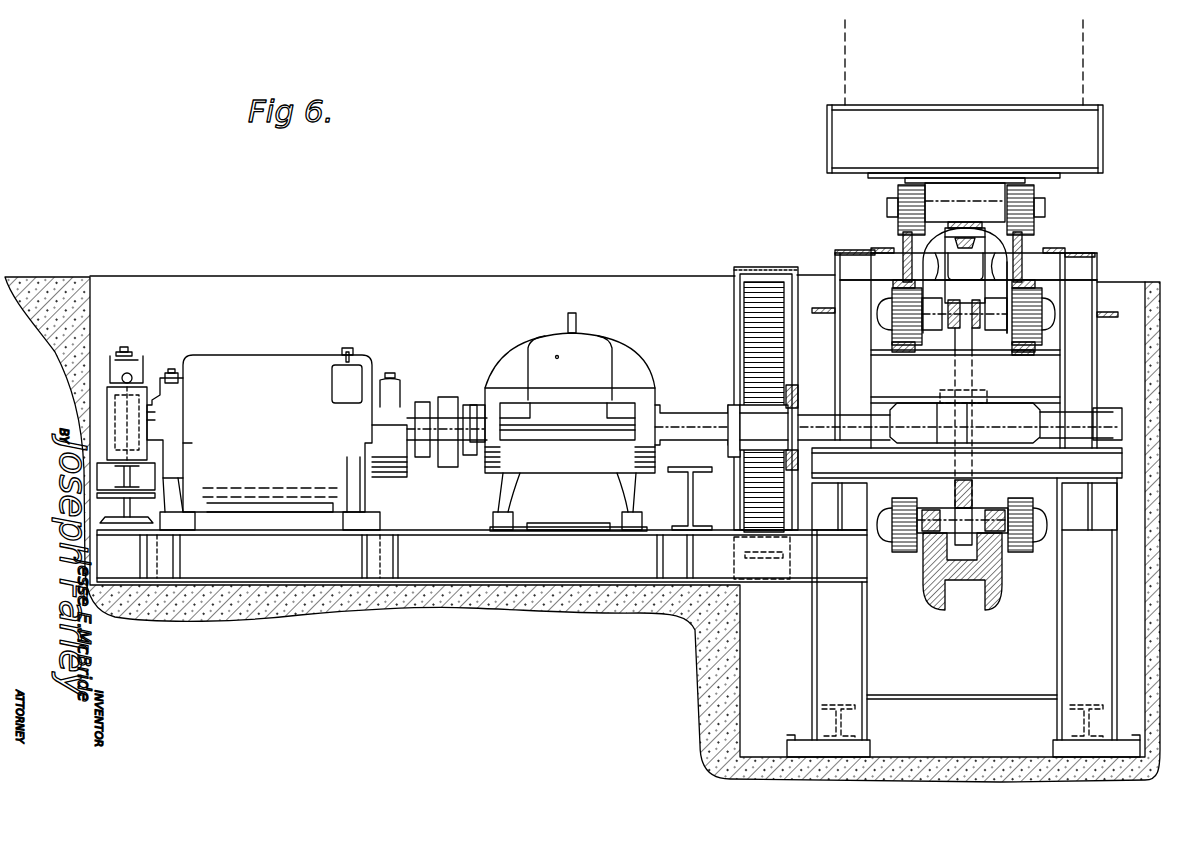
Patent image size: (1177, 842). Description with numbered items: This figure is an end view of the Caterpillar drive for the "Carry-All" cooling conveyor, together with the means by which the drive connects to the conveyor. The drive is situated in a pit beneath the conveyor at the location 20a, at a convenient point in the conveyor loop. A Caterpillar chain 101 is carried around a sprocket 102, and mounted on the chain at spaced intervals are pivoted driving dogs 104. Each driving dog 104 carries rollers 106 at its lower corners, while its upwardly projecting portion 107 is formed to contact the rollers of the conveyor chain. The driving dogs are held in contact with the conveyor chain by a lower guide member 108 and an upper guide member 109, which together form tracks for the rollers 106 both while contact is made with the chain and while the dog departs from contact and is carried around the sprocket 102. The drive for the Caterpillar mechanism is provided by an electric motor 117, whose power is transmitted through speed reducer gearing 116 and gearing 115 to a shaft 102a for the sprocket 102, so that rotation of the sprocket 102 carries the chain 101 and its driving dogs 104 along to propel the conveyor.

The electric motor 117 is at (296, 367).
The speed reducer gearing 116 is at (593, 343).
The gearing 115 is at (757, 320).
The driving dog 104 is at (928, 267).
The upwardly projecting portion 107 is at (997, 253).
The upper guide member 109 is at (1030, 282).
The rollers 106 is at (1025, 328).
The lower guide member 108 is at (1035, 352).
The sprocket 102 is at (975, 374).
The shaft 102a is at (1103, 418).
The Caterpillar chain 101 is at (978, 538).
The location of the Caterpillar drive 20a is at (754, 657).